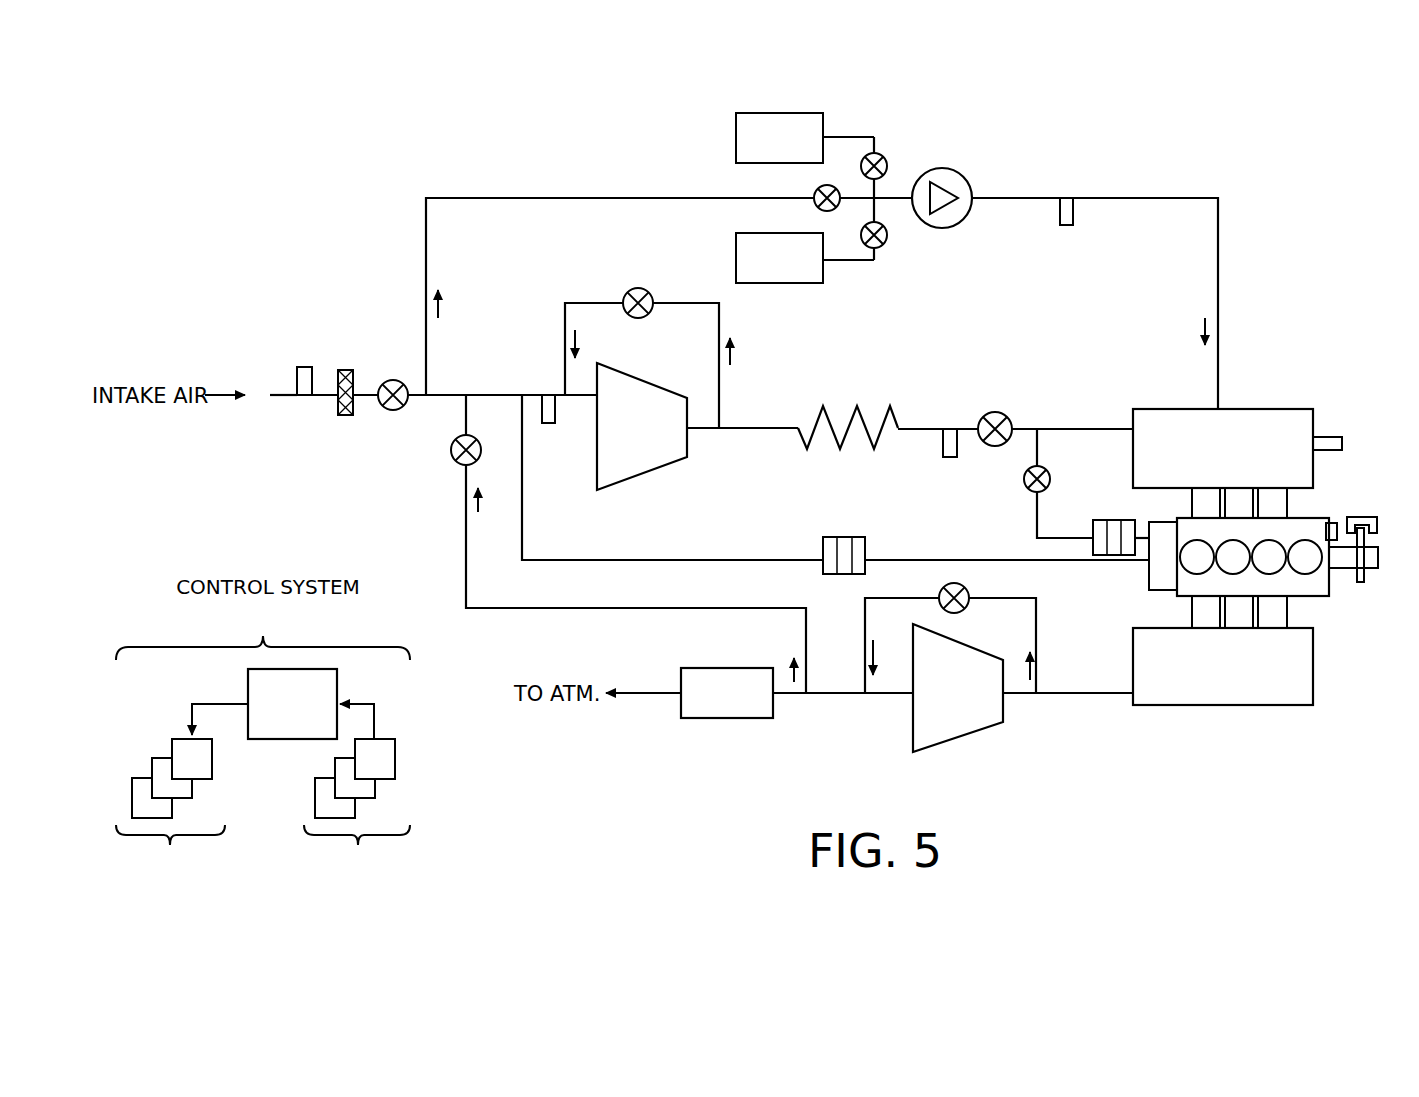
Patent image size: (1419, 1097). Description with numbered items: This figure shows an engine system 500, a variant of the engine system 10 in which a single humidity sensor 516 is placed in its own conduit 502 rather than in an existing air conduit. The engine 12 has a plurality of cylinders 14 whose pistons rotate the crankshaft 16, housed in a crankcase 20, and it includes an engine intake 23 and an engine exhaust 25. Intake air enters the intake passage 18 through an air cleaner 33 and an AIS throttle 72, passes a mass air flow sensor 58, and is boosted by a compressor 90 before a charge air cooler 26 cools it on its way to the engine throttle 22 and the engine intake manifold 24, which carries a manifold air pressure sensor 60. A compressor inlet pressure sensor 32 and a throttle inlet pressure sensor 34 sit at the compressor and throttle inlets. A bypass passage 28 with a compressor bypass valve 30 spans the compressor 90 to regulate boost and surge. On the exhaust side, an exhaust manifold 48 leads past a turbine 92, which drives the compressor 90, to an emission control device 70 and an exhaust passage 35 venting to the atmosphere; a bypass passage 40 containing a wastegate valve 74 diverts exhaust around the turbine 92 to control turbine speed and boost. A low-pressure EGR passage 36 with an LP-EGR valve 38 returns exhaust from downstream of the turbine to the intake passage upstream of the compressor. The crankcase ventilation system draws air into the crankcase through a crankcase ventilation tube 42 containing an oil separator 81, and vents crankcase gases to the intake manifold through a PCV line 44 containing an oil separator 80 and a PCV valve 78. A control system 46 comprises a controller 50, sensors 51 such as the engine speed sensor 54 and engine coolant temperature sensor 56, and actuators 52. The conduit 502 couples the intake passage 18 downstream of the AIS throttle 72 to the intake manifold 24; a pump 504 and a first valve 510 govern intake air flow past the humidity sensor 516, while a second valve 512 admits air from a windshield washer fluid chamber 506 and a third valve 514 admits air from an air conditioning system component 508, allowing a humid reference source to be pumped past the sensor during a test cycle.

The engine system 10 is at (210, 160).
The engine system 500 is at (1335, 112).
The engine 12 is at (1300, 600).
The cylinders 14 is at (1188, 572).
The crankshaft 16 is at (1373, 570).
The intake passage 18 is at (283, 392).
The crankcase 20 is at (1163, 556).
The engine throttle 22 is at (993, 412).
The engine intake 23 is at (985, 348).
The engine intake manifold 24 is at (1223, 448).
The engine exhaust 25 is at (1092, 722).
The charge air cooler 26 is at (886, 411).
The bypass passage 28 is at (580, 303).
The compressor bypass valve 30 is at (632, 289).
The compressor inlet pressure sensor 32 is at (548, 425).
The air cleaner 33 is at (342, 416).
The throttle inlet pressure sensor 34 is at (949, 458).
The exhaust passage 35 is at (650, 693).
The low-pressure EGR passage 36 is at (528, 608).
The LP-EGR valve 38 is at (455, 460).
The bypass passage 40 is at (1013, 598).
The crankcase ventilation tube 42 is at (645, 560).
The PCV line 44 is at (1037, 515).
The control system 46 is at (263, 633).
The exhaust manifold 48 is at (1223, 666).
The controller 50 is at (283, 704).
The sensors 51 is at (357, 823).
The actuators 52 is at (183, 824).
The engine speed sensor 54 is at (1372, 517).
The engine coolant temperature sensor 56 is at (1333, 522).
The mass air flow sensor 58 is at (306, 367).
The manifold air pressure sensor 60 is at (1342, 443).
The emission control device 70 is at (727, 693).
The AIS throttle 72 is at (389, 380).
The wastegate valve 74 is at (963, 586).
The PCV valve 78 is at (1025, 473).
The oil separator 80 is at (1130, 520).
The oil separator 81 is at (838, 537).
The compressor 90 is at (697, 426).
The turbine 92 is at (953, 688).
The conduit 502 is at (605, 198).
The pump 504 is at (962, 180).
The windshield washer fluid chamber 506 is at (805, 258).
The air conditioning system component 508 is at (805, 138).
The first valve 510 is at (818, 190).
The second valve 512 is at (886, 244).
The third valve 514 is at (886, 160).
The humidity sensor 516 is at (1066, 228).